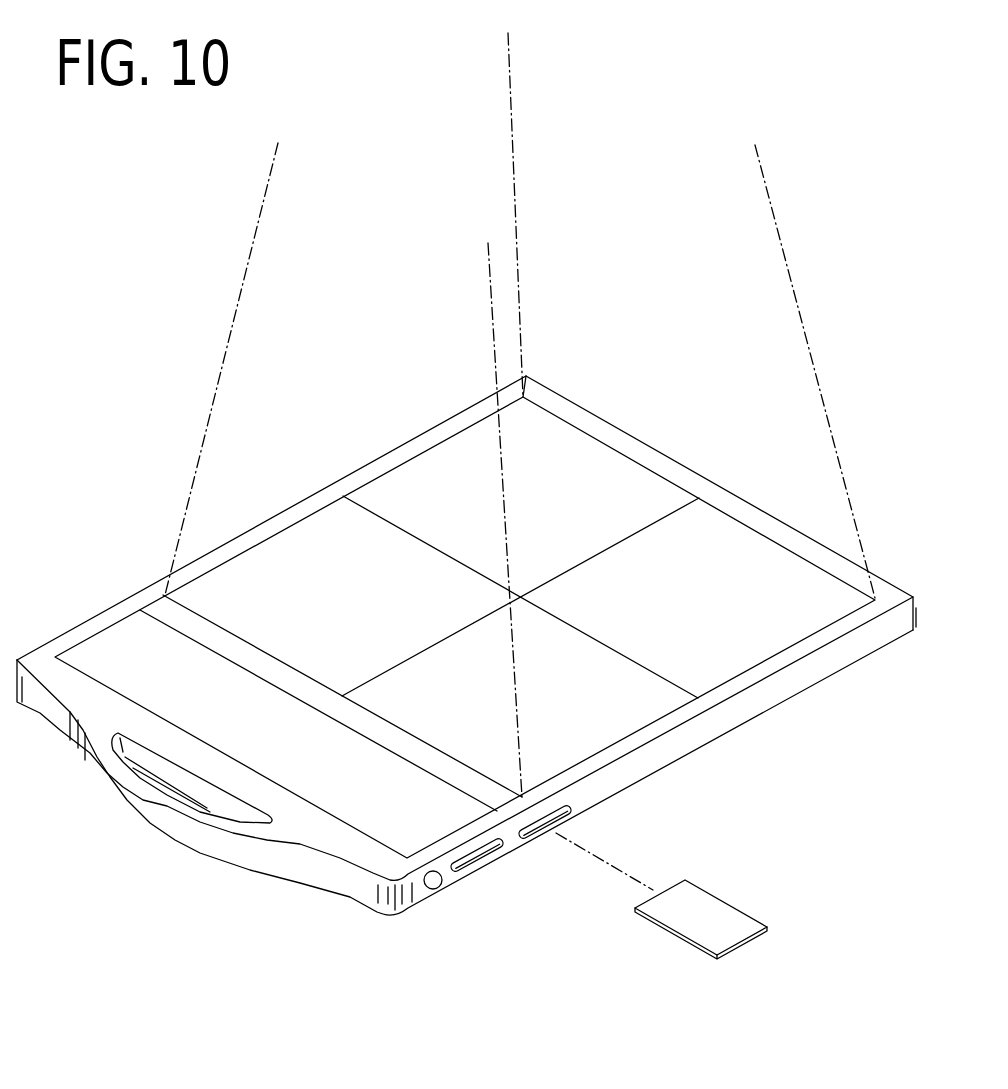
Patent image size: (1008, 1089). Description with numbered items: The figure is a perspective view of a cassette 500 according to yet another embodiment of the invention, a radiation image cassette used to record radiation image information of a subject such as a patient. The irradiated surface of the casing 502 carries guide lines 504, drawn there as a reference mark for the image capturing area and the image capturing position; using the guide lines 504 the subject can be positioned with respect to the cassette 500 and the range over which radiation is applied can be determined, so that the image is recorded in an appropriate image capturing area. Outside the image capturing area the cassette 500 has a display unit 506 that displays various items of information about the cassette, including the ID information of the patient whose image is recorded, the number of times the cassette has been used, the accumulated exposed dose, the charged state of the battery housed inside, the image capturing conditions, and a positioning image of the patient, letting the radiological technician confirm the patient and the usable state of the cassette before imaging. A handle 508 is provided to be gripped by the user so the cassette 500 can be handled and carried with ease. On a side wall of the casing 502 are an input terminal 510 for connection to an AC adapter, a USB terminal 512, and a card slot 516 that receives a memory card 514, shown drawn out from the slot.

The cassette 500 is at (147, 578).
The casing 502 is at (700, 748).
The guide lines 504 is at (603, 440).
The display unit 506 is at (83, 657).
The handle 508 is at (170, 826).
The input terminal 510 is at (442, 888).
The USB terminal 512 is at (492, 860).
The memory card 514 is at (733, 922).
The card slot 516 is at (545, 838).